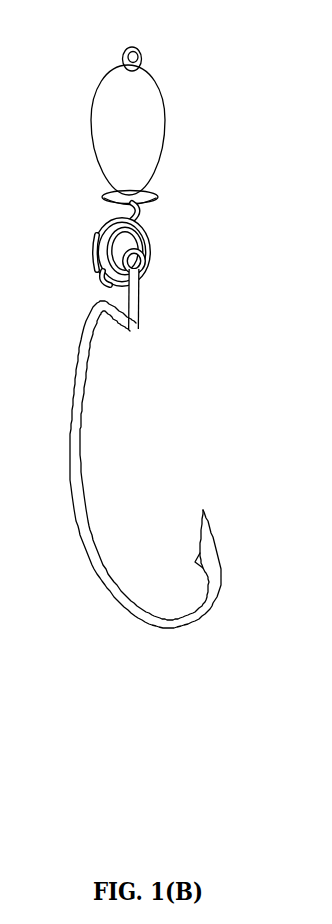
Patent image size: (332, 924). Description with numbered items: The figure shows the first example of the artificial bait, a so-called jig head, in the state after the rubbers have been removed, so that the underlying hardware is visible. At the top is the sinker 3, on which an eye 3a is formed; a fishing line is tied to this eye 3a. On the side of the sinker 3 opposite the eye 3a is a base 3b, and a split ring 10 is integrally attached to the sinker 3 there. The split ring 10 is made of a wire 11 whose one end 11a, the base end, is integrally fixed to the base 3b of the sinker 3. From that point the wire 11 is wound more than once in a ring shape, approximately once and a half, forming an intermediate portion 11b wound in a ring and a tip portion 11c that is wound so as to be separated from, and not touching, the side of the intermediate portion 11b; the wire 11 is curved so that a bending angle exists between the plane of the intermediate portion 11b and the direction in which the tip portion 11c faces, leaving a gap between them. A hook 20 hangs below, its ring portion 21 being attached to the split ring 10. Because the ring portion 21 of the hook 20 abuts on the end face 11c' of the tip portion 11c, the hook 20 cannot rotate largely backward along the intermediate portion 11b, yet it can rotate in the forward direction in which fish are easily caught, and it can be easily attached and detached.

The sinker 3 is at (102, 113).
The eye 3a is at (133, 46).
The base of the sinker 3b is at (145, 191).
The split ring 10 is at (156, 240).
The wire 11 is at (142, 233).
The one end of the wire 11a is at (108, 218).
The intermediate portion 11b is at (144, 262).
The tip portion 11c is at (75, 282).
The end face of the tip portion 11c' is at (128, 319).
The hook 20 is at (87, 513).
The ring portion 21 is at (143, 275).